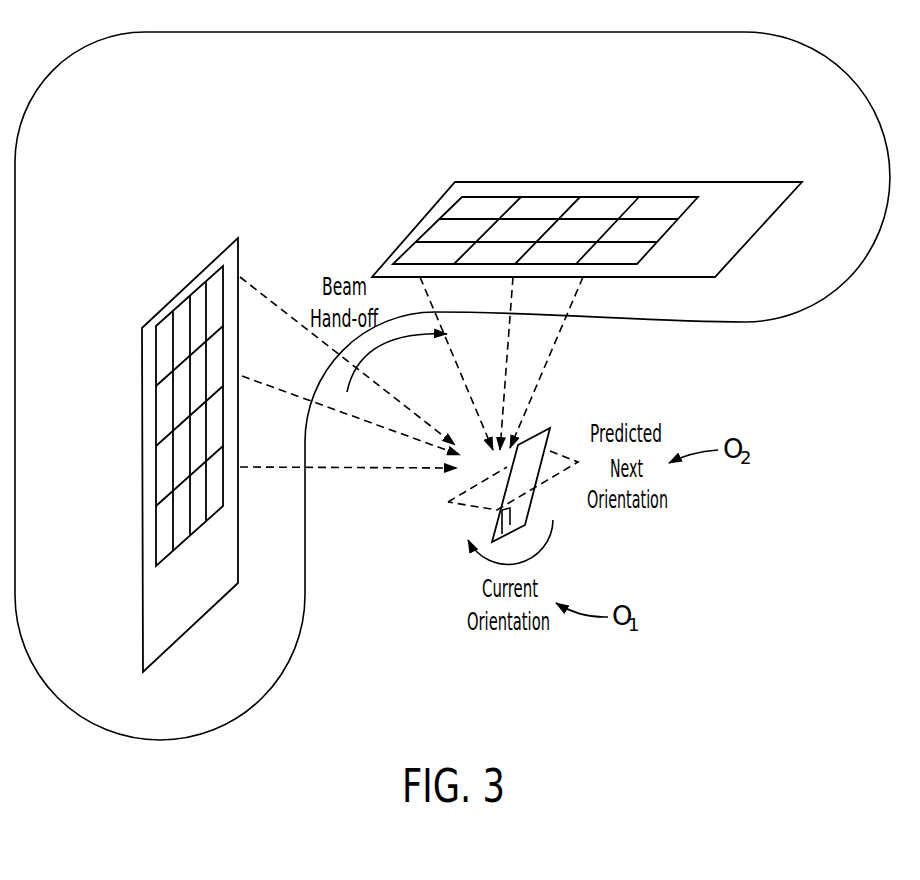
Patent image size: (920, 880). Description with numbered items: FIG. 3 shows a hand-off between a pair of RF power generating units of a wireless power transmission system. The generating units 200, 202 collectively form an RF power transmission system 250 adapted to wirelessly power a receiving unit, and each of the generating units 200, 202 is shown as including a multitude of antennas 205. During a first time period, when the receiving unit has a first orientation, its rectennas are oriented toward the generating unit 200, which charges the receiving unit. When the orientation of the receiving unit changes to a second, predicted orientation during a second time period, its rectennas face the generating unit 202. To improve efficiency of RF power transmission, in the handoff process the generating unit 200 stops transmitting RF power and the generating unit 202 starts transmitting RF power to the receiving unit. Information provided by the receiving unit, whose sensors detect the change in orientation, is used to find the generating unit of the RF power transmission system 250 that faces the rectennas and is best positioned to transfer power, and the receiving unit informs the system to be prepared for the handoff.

The generating unit 200 is at (155, 597).
The generating unit 202 is at (757, 228).
The antennas 205 is at (468, 206).
The RF power transmission system 250 is at (835, 63).